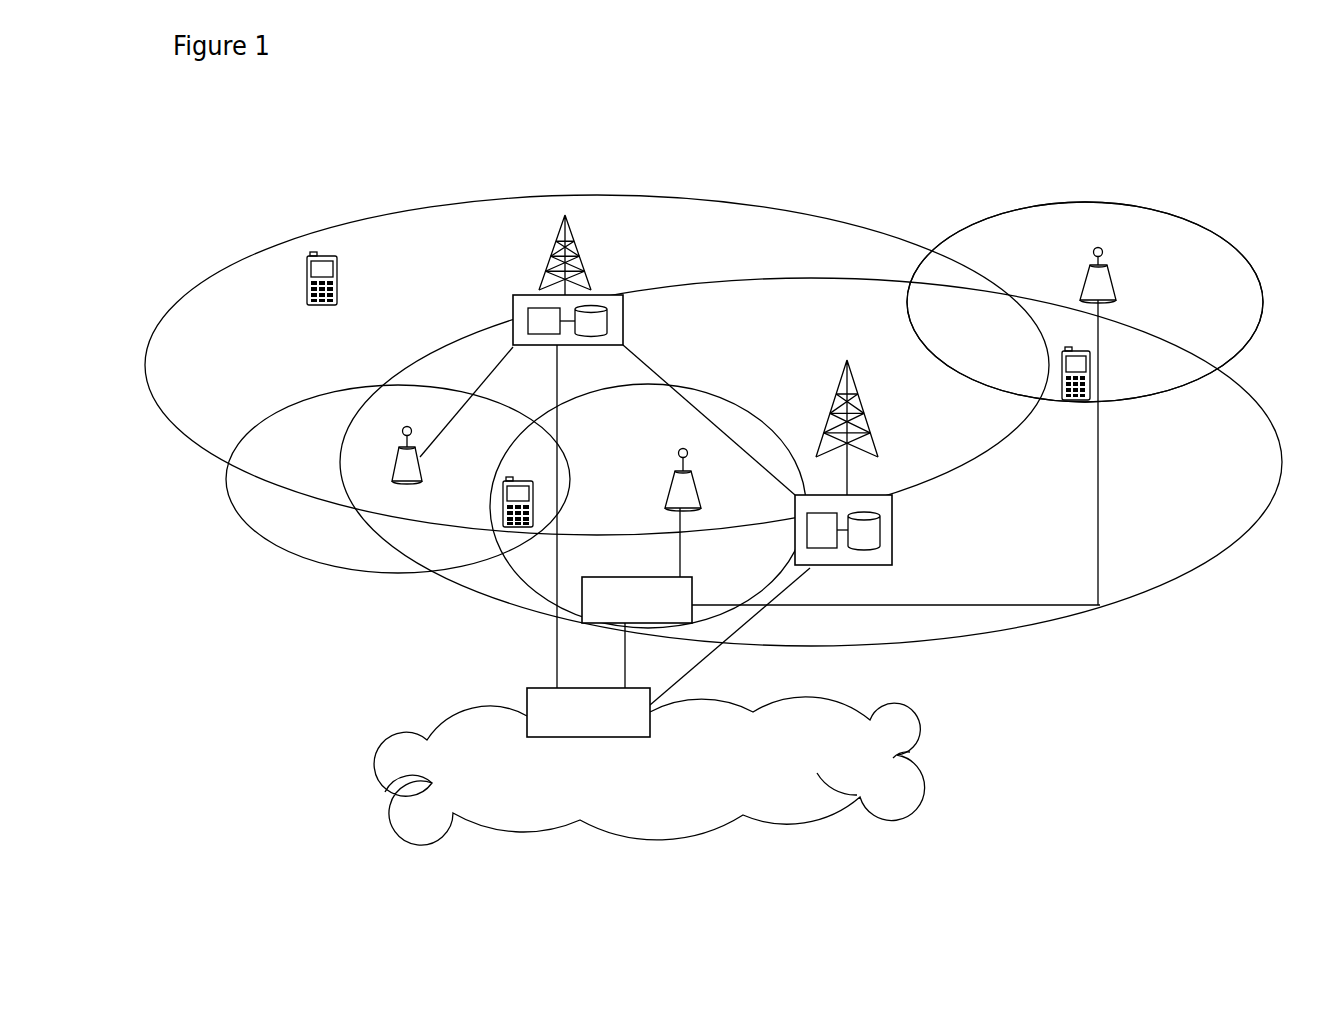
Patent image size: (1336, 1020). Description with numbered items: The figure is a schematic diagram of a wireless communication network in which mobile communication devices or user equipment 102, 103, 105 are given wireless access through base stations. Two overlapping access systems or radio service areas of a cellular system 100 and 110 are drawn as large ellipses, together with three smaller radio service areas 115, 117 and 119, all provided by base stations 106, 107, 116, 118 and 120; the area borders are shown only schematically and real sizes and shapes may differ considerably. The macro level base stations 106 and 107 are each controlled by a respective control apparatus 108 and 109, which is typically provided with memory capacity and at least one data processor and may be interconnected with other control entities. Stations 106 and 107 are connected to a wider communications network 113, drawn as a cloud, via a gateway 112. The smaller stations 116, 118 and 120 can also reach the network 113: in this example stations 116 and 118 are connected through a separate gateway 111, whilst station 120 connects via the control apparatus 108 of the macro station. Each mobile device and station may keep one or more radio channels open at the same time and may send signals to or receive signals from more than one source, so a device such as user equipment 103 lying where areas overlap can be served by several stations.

The radio service area of cellular system 100 is at (237, 242).
The user equipment 102 is at (307, 293).
The user equipment 103 is at (503, 503).
The user equipment 105 is at (1077, 400).
The macro level base station 106 is at (550, 262).
The macro level base station 107 is at (867, 427).
The control apparatus 108 is at (512, 307).
The control apparatus 109 is at (882, 555).
The radio service area of cellular system 110 is at (1162, 597).
The gateway 111 is at (588, 607).
The gateway 112 is at (527, 688).
The wider communications network 113 is at (453, 745).
The smaller radio service area 115 is at (1235, 227).
The smaller station 116 is at (993, 217).
The smaller radio service area 117 is at (718, 387).
The smaller station 118 is at (672, 495).
The smaller radio service area 119 is at (308, 553).
The smaller station 120 is at (393, 458).